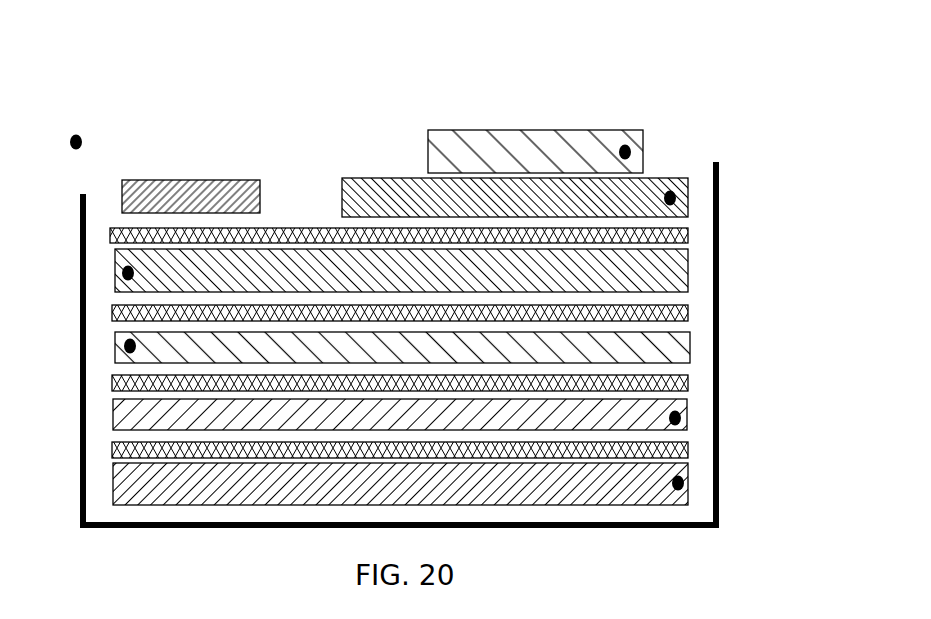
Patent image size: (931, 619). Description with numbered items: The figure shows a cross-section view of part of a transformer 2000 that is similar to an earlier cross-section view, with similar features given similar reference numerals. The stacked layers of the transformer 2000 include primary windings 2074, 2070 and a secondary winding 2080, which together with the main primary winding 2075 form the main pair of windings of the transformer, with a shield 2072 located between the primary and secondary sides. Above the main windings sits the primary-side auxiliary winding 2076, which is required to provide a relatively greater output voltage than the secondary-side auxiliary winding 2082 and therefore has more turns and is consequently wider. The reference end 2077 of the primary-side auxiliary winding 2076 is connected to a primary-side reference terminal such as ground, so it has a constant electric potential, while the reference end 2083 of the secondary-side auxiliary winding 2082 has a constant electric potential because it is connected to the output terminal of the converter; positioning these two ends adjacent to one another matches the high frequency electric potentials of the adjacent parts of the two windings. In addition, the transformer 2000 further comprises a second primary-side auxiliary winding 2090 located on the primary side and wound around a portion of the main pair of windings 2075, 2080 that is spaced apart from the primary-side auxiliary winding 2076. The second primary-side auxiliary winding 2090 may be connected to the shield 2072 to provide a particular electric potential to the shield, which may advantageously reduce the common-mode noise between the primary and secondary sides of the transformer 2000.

The transformer 2000 is at (92, 116).
The second primary-side auxiliary winding 2090 is at (252, 180).
The primary-side auxiliary winding 2076 is at (390, 178).
The reference end of the primary-side auxiliary winding 2077 is at (685, 203).
The secondary-side auxiliary winding 2082 is at (470, 130).
The reference end of the secondary-side auxiliary winding 2083 is at (645, 152).
The primary winding 2074 is at (680, 263).
The shield 2072 is at (678, 345).
The secondary winding 2080 is at (687, 405).
The primary winding 2070 is at (690, 477).
The main primary winding 2075 is at (113, 483).